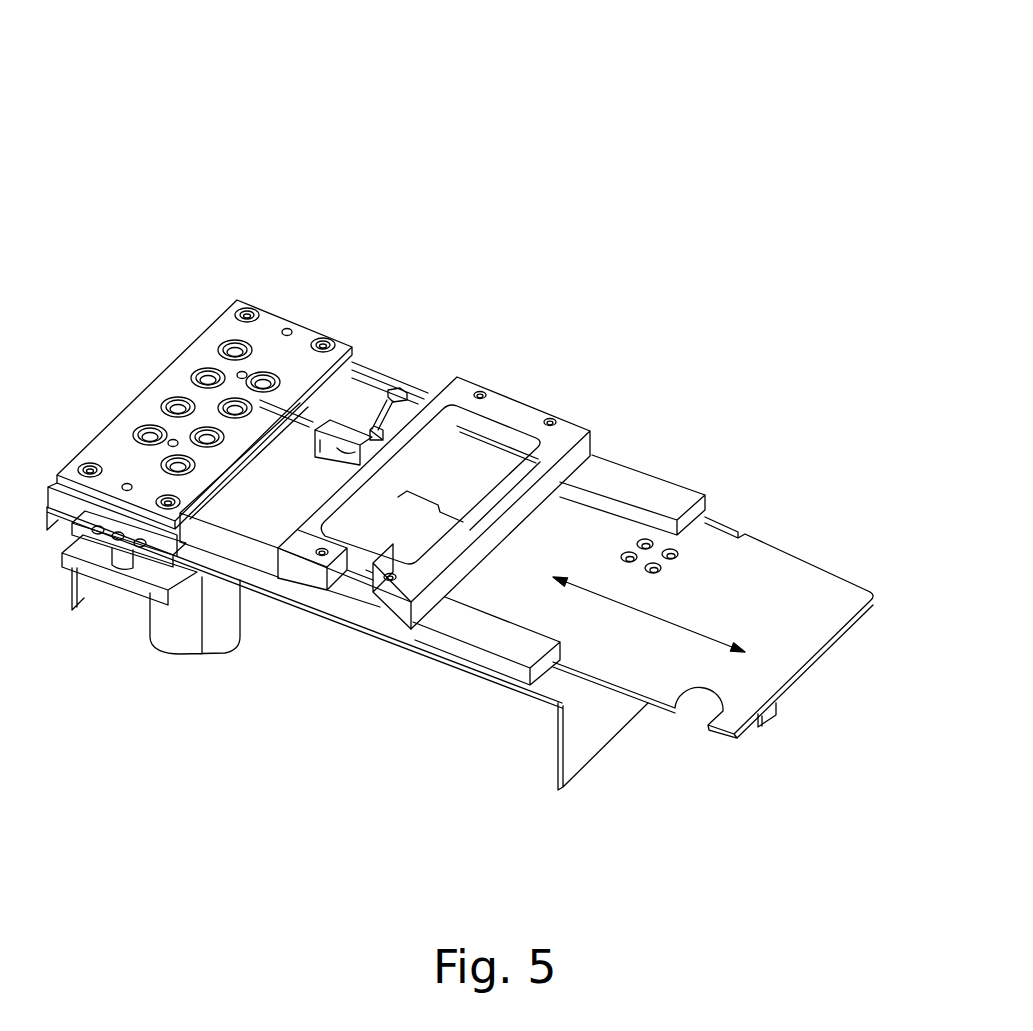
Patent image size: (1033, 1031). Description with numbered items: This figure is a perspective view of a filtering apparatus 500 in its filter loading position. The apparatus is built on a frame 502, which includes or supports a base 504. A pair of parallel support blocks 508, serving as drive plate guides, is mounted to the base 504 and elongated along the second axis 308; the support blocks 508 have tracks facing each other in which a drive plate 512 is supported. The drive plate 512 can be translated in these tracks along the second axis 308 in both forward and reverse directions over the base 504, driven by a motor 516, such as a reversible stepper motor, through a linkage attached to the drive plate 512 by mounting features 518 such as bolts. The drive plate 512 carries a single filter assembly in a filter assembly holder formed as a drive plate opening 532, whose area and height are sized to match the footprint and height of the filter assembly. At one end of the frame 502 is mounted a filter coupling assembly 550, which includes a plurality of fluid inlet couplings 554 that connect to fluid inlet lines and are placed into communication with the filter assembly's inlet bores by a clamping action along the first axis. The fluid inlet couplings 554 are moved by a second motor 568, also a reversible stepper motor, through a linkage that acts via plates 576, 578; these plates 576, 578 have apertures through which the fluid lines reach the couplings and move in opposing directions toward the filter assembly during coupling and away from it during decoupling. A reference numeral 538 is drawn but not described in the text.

The filtering apparatus 500 is at (123, 132).
The frame 502 is at (557, 765).
The base 504 is at (328, 470).
The support blocks 508 is at (660, 477).
The drive plate 512 is at (828, 572).
The motor 516 is at (766, 724).
The mounting feature 518 is at (683, 557).
The drive plate opening 532 is at (475, 467).
The clamping frame 538 is at (574, 418).
The filter coupling assembly 550 is at (138, 357).
The fluid inlet couplings 554 is at (143, 437).
The motor 568 is at (214, 655).
The plate 576 is at (281, 323).
The plate 578 is at (150, 557).
The second axis 308 is at (713, 635).